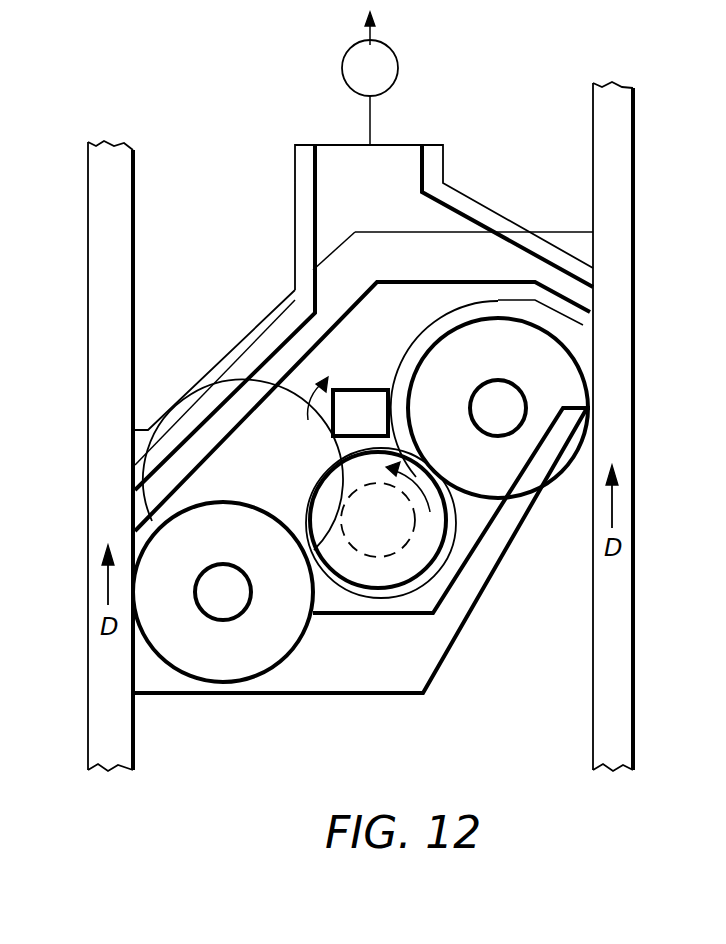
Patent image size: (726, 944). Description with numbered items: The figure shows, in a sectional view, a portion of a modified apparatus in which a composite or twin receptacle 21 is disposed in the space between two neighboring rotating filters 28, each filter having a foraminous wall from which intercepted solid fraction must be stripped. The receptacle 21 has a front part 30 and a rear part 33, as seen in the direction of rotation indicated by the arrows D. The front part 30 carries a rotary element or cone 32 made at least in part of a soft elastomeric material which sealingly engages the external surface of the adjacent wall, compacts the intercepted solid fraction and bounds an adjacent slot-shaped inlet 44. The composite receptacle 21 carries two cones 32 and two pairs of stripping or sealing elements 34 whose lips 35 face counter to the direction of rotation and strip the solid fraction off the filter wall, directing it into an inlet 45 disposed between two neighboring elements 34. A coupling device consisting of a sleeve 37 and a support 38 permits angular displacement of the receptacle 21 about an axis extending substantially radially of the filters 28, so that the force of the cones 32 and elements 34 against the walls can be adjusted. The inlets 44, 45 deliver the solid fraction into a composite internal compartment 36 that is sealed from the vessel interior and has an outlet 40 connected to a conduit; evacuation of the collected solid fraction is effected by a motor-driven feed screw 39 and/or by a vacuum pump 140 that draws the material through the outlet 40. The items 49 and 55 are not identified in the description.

The filter 28 is at (222, 172).
The front part 30 is at (176, 693).
The rotary element 32 is at (475, 353).
The rear part 33 is at (403, 288).
The stripping or sealing element 34 is at (250, 365).
The lip 35 is at (592, 335).
The internal compartment 36 is at (283, 503).
The sleeve 37 is at (355, 405).
The support 38 is at (377, 420).
The feed screw 39 is at (418, 547).
The receptacle 21 is at (437, 586).
The outlet 40 is at (305, 155).
The inlet 44 is at (583, 357).
The inlet 45 is at (580, 293).
The element 49 is at (0, 240).
The element 55 is at (0, 378).
The vacuum pump 140 is at (398, 70).